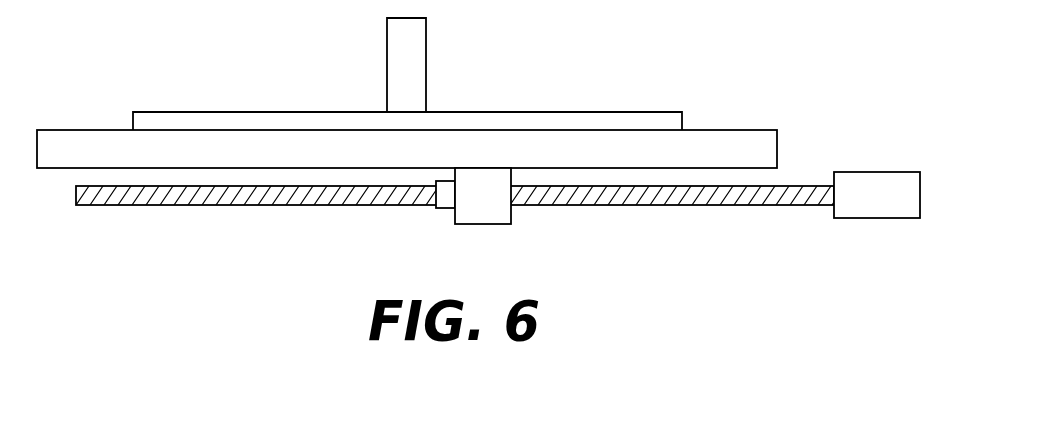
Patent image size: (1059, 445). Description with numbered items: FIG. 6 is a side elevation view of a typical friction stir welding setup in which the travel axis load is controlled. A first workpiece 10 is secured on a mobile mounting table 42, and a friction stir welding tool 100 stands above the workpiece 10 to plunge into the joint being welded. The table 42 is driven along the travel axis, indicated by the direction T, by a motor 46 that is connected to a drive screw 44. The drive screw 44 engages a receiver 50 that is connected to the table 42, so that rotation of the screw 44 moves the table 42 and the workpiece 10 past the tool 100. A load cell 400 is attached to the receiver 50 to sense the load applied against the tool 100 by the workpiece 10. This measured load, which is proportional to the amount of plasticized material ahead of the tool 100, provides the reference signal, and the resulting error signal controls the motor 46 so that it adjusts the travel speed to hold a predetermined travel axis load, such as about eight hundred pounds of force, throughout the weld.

The direction of transfer T is at (47, 118).
The first workpiece 10 is at (640, 111).
The friction stir welding tool 100 is at (426, 49).
The mounting table 42 is at (777, 133).
The drive screw 44 is at (618, 205).
The motor 46 is at (847, 218).
The receiver 50 is at (511, 224).
The load cell 400 is at (437, 209).